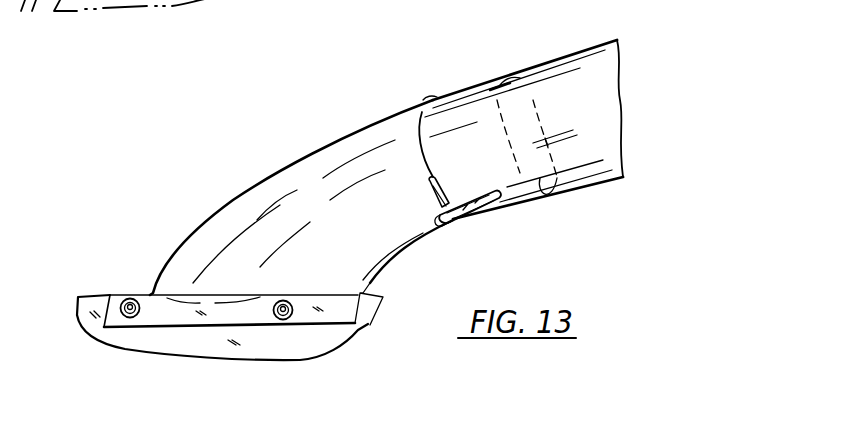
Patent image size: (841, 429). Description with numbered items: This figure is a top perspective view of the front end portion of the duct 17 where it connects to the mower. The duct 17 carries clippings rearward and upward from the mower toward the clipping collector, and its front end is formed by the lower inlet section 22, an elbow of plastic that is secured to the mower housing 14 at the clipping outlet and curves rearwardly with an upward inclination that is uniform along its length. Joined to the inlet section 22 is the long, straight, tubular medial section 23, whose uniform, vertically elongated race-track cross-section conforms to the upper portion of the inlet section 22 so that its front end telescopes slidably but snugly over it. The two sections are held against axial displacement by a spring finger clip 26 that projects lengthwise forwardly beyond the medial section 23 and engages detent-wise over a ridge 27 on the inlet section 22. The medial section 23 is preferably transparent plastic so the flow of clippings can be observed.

The mower housing 14 is at (358, 318).
The duct 17 is at (503, 70).
The lower inlet section 22 is at (362, 158).
The tubular medial section 23 is at (582, 60).
The spring finger clip 26 is at (447, 220).
The ridge 27 is at (440, 203).